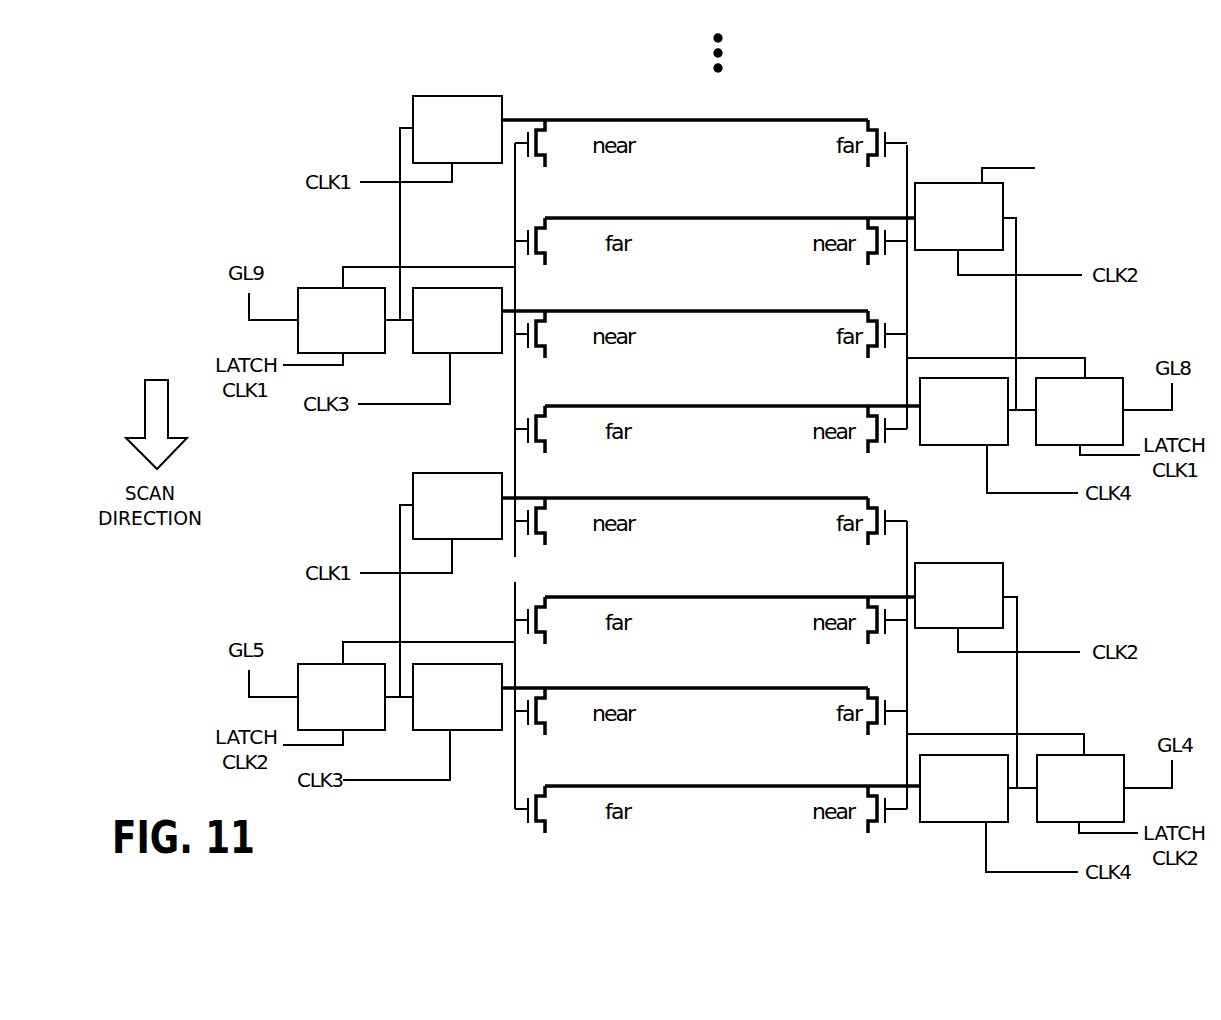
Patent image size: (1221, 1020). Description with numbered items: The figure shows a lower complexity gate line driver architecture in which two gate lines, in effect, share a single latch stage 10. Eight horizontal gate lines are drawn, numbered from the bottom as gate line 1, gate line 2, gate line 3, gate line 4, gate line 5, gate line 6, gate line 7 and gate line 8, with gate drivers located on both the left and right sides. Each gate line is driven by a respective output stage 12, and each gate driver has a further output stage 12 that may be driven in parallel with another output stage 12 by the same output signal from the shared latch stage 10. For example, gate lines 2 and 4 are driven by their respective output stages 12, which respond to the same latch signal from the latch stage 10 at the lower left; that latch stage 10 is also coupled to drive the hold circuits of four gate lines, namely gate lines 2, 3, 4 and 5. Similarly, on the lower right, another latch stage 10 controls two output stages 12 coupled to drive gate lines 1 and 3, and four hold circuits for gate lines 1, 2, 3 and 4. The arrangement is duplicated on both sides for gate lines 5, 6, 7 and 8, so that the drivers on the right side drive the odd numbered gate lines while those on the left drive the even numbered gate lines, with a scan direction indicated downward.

The latch stage 10 is at (313, 286).
The output stage 12 is at (457, 96).
The gate line 1 is at (732, 771).
The gate line 2 is at (685, 673).
The gate line 3 is at (730, 582).
The gate line 4 is at (685, 483).
The gate line 5 is at (732, 391).
The gate line 6 is at (685, 296).
The gate line 7 is at (730, 203).
The gate line 8 is at (685, 105).